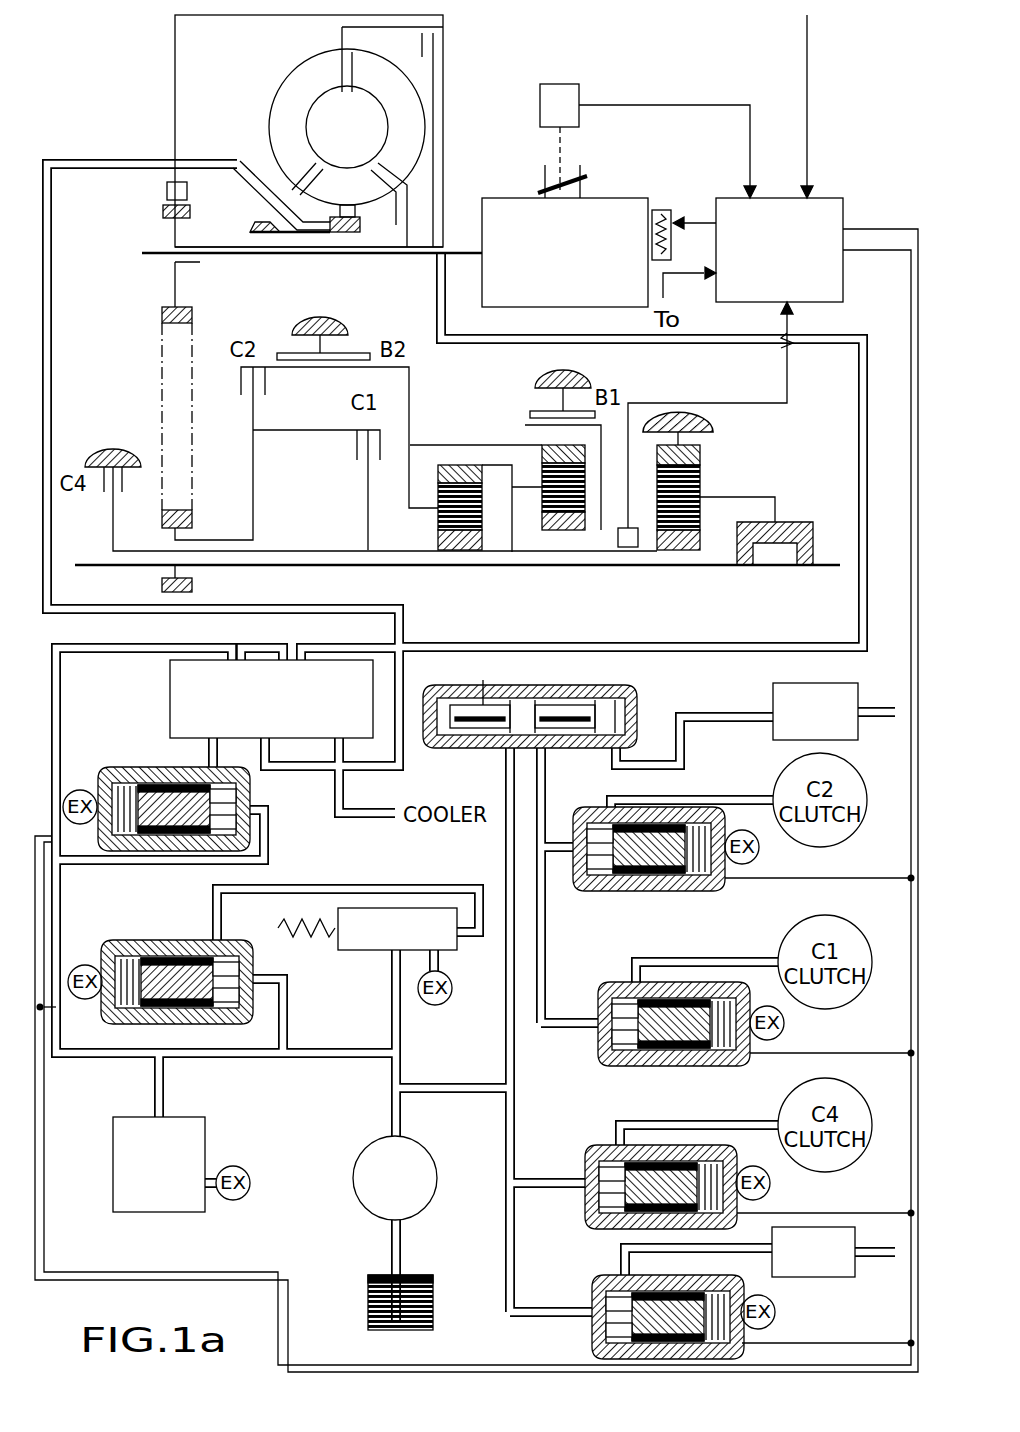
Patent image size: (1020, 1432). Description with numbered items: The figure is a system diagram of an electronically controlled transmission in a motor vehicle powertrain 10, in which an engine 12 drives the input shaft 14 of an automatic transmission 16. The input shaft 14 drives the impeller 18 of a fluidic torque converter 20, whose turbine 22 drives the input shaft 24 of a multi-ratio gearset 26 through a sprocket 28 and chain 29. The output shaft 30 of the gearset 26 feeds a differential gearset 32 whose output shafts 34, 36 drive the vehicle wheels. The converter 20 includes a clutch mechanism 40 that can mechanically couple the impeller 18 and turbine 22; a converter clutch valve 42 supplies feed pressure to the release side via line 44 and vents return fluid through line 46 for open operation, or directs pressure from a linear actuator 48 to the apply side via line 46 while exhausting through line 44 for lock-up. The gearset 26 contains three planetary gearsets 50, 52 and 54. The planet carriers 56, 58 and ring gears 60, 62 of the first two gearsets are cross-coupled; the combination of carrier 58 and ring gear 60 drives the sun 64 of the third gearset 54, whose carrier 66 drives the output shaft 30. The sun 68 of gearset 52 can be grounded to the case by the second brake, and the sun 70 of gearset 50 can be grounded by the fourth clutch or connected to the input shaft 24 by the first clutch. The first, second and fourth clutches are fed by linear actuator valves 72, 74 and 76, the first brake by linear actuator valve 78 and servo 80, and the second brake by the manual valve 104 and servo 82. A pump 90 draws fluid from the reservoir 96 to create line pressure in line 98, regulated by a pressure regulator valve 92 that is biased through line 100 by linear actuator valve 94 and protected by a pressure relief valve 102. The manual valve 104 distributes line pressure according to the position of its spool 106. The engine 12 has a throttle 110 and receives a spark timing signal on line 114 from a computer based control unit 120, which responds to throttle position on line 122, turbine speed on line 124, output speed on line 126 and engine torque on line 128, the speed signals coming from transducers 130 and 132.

The motor vehicle powertrain 10 is at (163, 68).
The engine 12 is at (580, 305).
The transmission input shaft 14 is at (348, 257).
The automatic transmission 16 is at (879, 448).
The impeller 18 is at (304, 86).
The fluidic torque converter 20 is at (328, 40).
The turbine 22 is at (405, 82).
The gearset input shaft 24 is at (232, 540).
The multi-ratio gearset 26 is at (340, 303).
The sprocket 28 is at (162, 216).
The chain 29 is at (160, 418).
The output shaft 30 is at (775, 498).
The differential gearset 32 is at (790, 520).
The differential output shaft 34 is at (673, 570).
The differential output shaft 36 is at (830, 568).
The clutch mechanism 40 is at (435, 202).
The converter clutch valve 42 is at (176, 728).
The line 44 is at (546, 338).
The line 46 is at (141, 160).
The linear actuator 48 is at (250, 780).
The first planetary gearset 50 is at (428, 543).
The second planetary gearset 52 is at (525, 520).
The third planetary gearset 54 is at (713, 525).
The planet carrier 56 is at (430, 518).
The planet carrier 58 is at (545, 455).
The ring gear 60 is at (445, 468).
The ring gear 62 is at (540, 486).
The sun gear 64 is at (660, 550).
The carrier 66 is at (712, 496).
The sun gear 68 is at (580, 535).
The sun gear 70 is at (472, 552).
The linear actuator valve 72 is at (600, 1000).
The linear actuator valve 74 is at (577, 828).
The linear actuator valve 76 is at (595, 1160).
The linear actuator valve 78 is at (600, 1292).
The fluid operated servo 80 is at (842, 1280).
The fluid operated servo 82 is at (778, 692).
The pump 90 is at (355, 1160).
The pressure regulator valve 92 is at (365, 950).
The linear actuator valve 94 is at (168, 930).
The reservoir 96 is at (368, 1288).
The line 98 is at (400, 1084).
The line 100 is at (368, 888).
The pressure relief valve 102 is at (113, 1165).
The manual valve 104 is at (480, 747).
The valve spool 106 is at (638, 725).
The throttle 110 is at (577, 193).
The line 114 is at (693, 223).
The control unit 120 is at (843, 212).
The line 122 is at (700, 104).
The line 124 is at (808, 100).
The line 126 is at (670, 400).
The line 128 is at (680, 282).
The turbine speed transducer 130 is at (166, 191).
The output speed transducer 132 is at (615, 546).